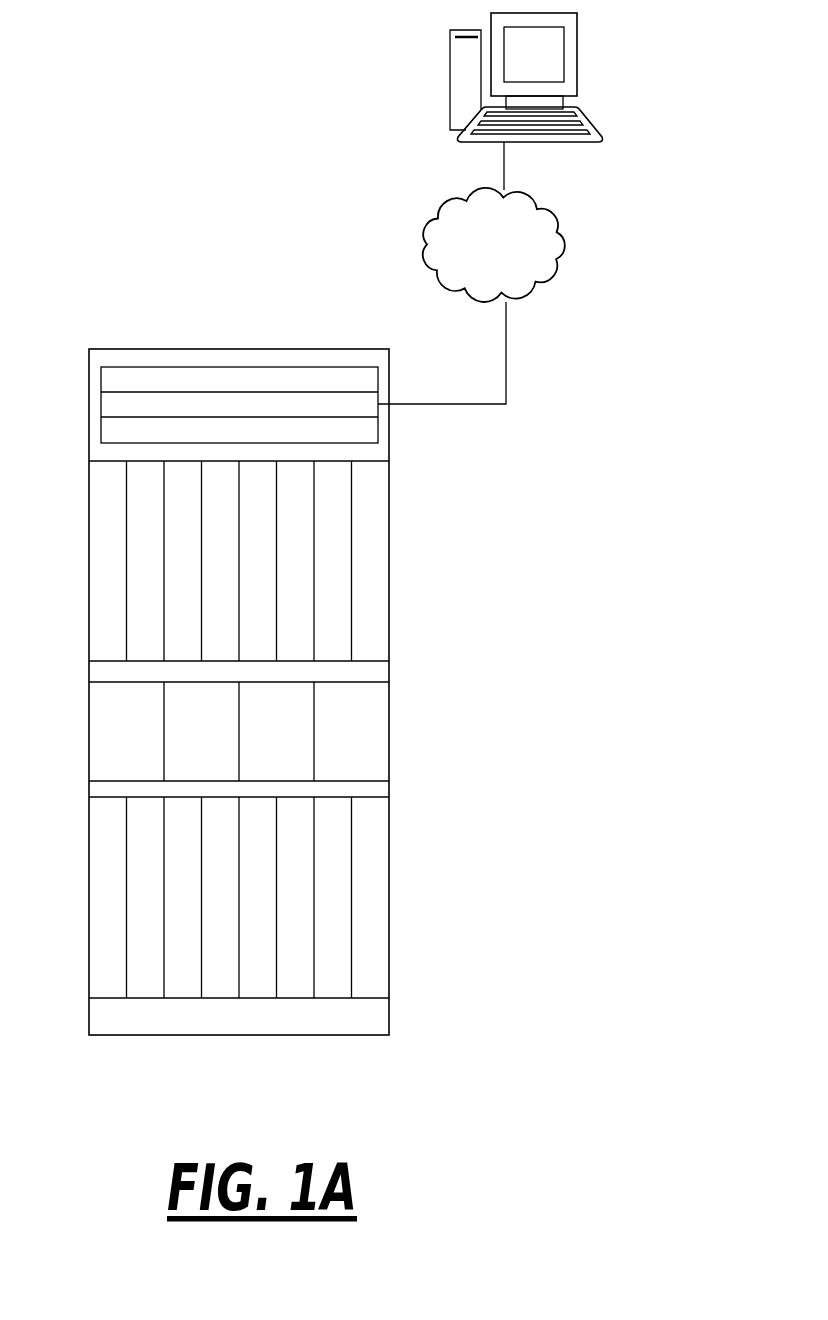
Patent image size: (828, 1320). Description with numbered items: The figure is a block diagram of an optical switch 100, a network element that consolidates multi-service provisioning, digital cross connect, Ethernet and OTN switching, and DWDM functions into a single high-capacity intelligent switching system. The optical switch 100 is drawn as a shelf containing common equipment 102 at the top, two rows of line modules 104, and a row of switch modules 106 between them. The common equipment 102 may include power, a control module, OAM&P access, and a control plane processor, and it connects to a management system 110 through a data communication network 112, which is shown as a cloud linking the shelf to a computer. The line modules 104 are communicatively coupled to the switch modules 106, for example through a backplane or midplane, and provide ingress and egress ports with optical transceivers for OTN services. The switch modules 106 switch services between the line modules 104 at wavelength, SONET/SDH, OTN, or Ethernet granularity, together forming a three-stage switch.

The optical switch 100 is at (188, 270).
The common equipment 102 is at (237, 367).
The line modules 104 is at (389, 523).
The switch modules 106 is at (389, 740).
The management system 110 is at (578, 63).
The data communication network 112 is at (481, 250).